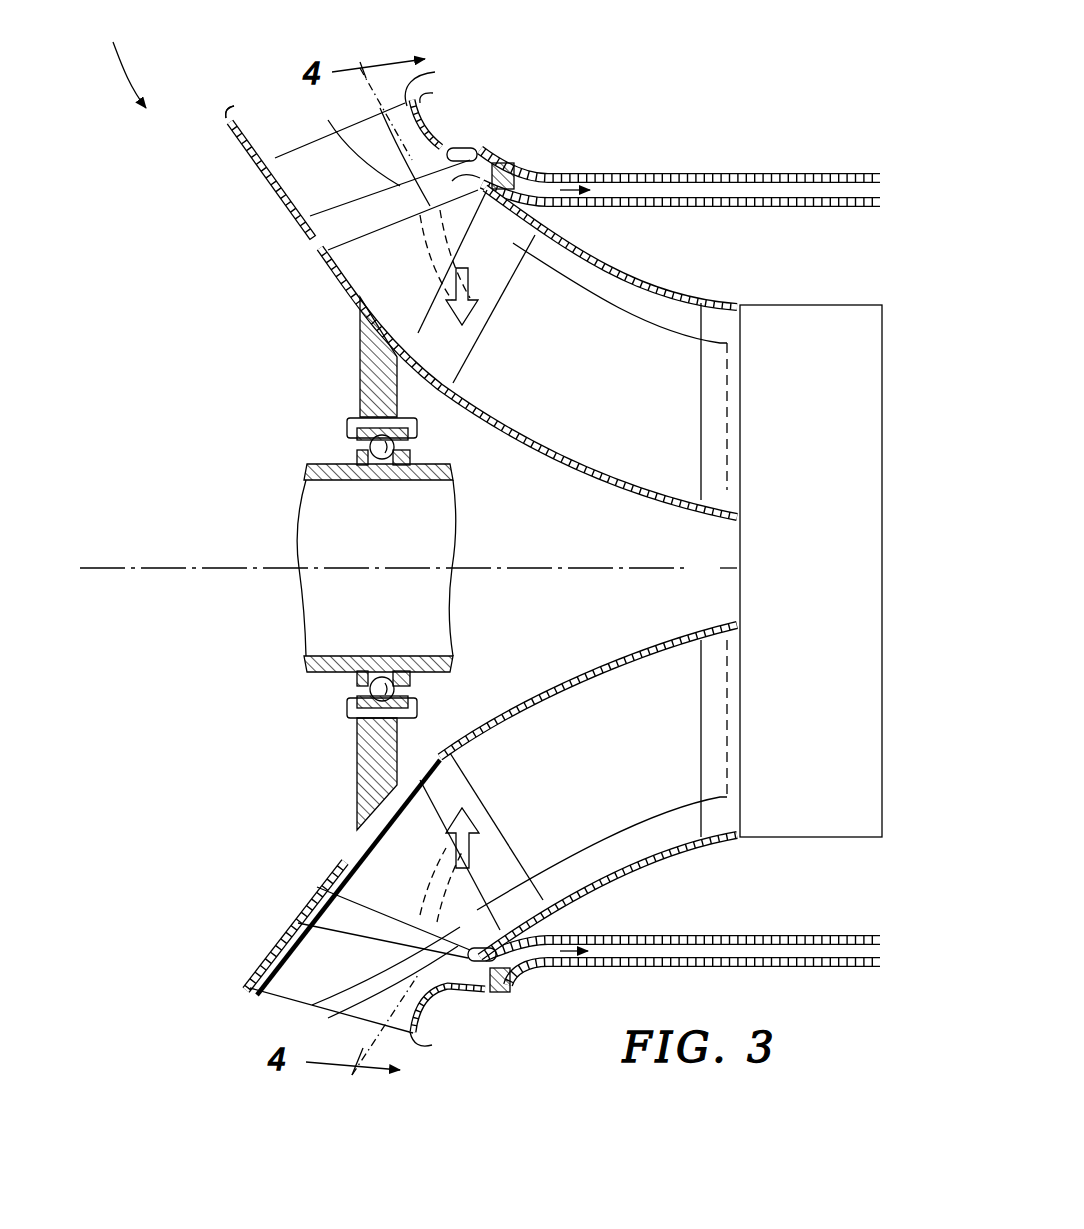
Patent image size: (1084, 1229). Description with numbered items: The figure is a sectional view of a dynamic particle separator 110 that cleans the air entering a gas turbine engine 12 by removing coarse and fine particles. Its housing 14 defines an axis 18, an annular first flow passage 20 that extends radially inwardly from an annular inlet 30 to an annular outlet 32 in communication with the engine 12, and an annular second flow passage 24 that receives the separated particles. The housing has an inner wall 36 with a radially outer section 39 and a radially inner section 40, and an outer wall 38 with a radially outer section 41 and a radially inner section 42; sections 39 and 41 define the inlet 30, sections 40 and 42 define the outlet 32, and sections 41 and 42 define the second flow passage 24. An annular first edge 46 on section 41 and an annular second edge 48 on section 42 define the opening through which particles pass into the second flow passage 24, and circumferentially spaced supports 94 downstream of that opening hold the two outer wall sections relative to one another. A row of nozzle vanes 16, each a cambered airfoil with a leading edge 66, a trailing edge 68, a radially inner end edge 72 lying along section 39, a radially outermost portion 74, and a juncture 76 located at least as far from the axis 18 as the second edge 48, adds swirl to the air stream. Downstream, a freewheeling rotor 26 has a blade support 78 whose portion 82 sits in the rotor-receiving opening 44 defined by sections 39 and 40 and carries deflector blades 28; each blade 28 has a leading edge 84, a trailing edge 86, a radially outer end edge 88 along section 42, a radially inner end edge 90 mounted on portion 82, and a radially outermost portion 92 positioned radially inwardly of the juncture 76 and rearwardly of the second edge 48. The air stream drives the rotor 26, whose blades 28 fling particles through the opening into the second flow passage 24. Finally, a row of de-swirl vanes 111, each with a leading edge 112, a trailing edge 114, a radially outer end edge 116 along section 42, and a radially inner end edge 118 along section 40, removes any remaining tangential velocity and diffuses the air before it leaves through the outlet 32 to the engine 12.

The dynamic particle separator 110 is at (110, 56).
The gas turbine engine 12 is at (808, 326).
The housing 14 is at (640, 172).
The nozzle vanes 16 is at (314, 164).
The axis 18 is at (130, 572).
The first flow passage 20 is at (470, 352).
The second flow passage 24 is at (724, 190).
The rotor 26 is at (358, 381).
The deflector blades 28 is at (358, 262).
The inlet 30 is at (240, 118).
The outlet 32 is at (713, 493).
The inner wall 36 is at (296, 223).
The outer wall 38 is at (438, 102).
The radially outer section of inner wall 39 is at (311, 246).
The radially inner section of inner wall 40 is at (572, 458).
The radially outer section of outer wall 41 is at (432, 130).
The radially inner section of outer wall 42 is at (633, 291).
The rotor-receiving opening 44 is at (432, 752).
The first edge 46 is at (462, 181).
The second edge 48 is at (480, 152).
The leading edge 66 is at (350, 128).
The trailing edge 68 is at (333, 212).
The radially inner end edge 72 is at (440, 150).
The radially outermost portion 74 is at (410, 98).
The juncture 76 is at (382, 172).
The blade support 78 is at (358, 351).
The portion of blade support 82 is at (345, 294).
The leading edge 84 is at (356, 240).
The trailing edge 86 is at (483, 222).
The radially outer end edge 88 is at (478, 200).
The radially inner end edge 90 is at (316, 321).
The radially outermost portion 92 is at (478, 196).
The supports 94 is at (514, 164).
The de-swirl vanes 111 is at (673, 318).
The leading edge 112 is at (500, 298).
The trailing edge 114 is at (702, 412).
The radially outer end edge 116 is at (612, 302).
The radially inner end edge 118 is at (576, 461).